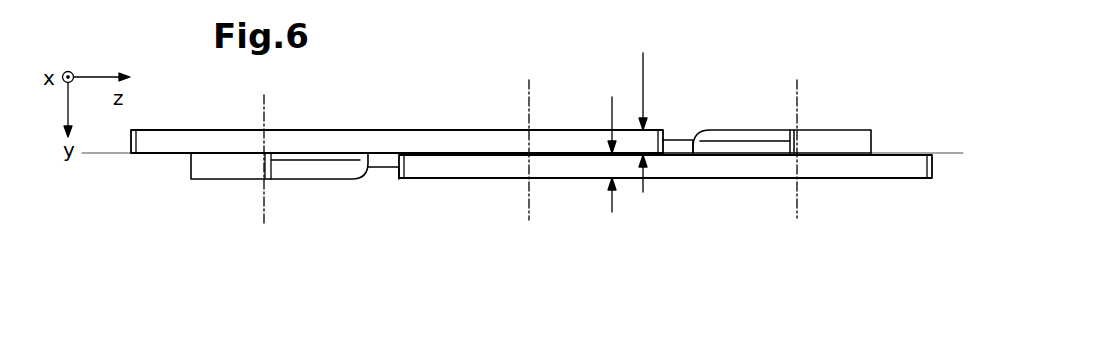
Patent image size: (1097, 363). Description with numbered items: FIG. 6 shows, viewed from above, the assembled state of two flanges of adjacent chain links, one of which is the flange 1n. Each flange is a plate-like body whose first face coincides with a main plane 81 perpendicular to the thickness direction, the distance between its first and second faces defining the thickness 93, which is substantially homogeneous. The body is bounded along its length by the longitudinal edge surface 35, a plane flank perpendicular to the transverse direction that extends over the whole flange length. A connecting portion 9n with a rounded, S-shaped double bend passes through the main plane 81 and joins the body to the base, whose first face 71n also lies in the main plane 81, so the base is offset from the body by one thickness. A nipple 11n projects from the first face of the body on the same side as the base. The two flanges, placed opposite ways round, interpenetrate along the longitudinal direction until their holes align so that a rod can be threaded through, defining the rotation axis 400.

The flange 1n is at (386, 121).
The longitudinal edge surface 35 is at (477, 168).
The thickness of the body 93 is at (612, 108).
The nipple 11n is at (387, 181).
The connecting portion 9n is at (332, 172).
The first face of the base 71n is at (222, 168).
The rotation axis 400 is at (264, 200).
The main plane 81 is at (945, 140).